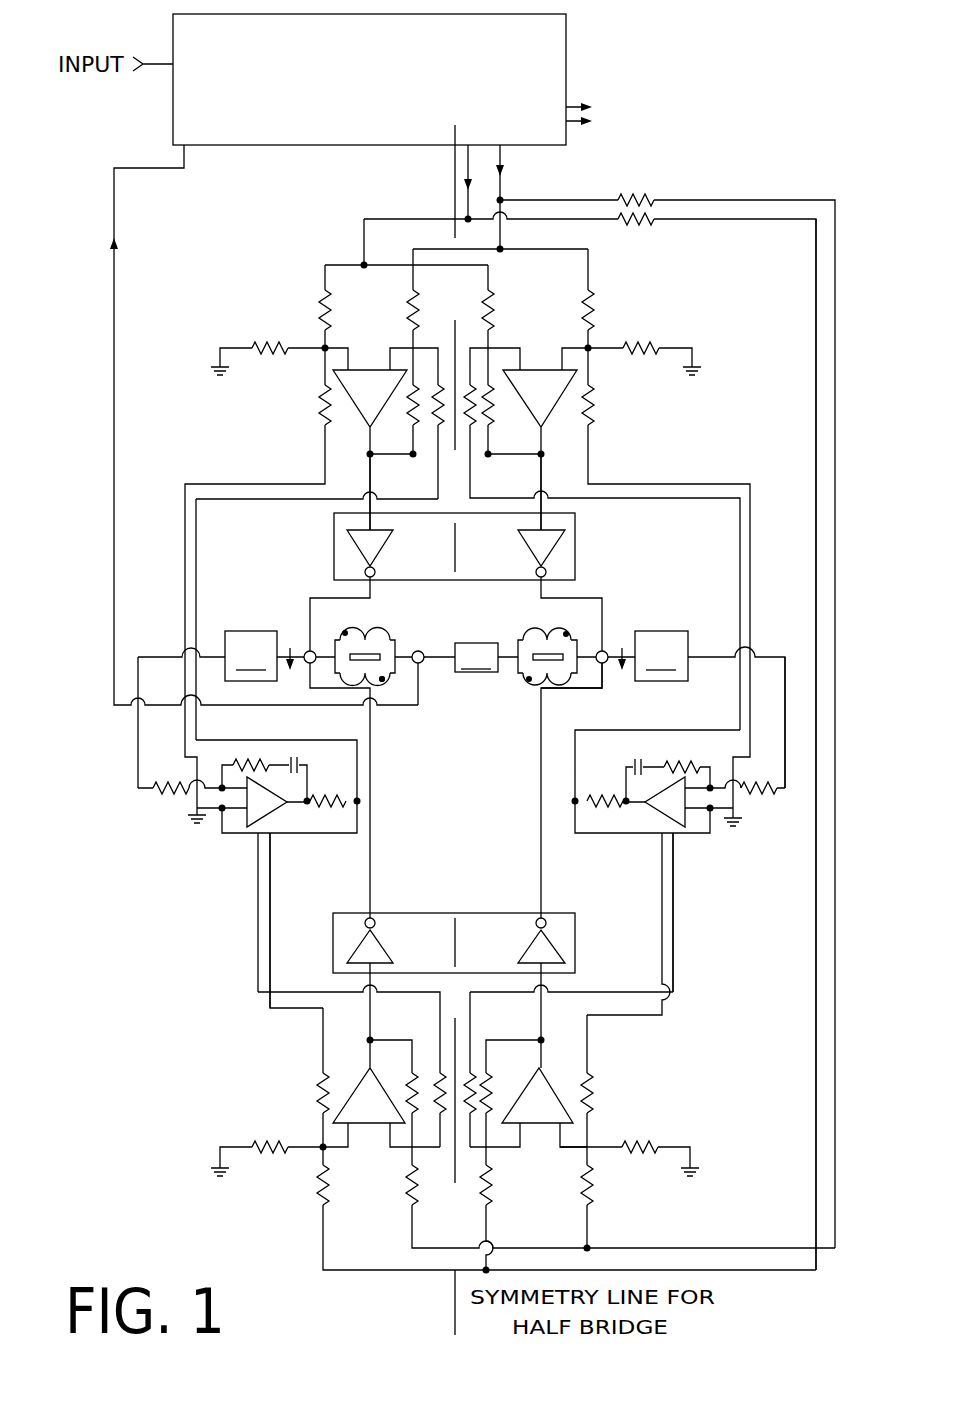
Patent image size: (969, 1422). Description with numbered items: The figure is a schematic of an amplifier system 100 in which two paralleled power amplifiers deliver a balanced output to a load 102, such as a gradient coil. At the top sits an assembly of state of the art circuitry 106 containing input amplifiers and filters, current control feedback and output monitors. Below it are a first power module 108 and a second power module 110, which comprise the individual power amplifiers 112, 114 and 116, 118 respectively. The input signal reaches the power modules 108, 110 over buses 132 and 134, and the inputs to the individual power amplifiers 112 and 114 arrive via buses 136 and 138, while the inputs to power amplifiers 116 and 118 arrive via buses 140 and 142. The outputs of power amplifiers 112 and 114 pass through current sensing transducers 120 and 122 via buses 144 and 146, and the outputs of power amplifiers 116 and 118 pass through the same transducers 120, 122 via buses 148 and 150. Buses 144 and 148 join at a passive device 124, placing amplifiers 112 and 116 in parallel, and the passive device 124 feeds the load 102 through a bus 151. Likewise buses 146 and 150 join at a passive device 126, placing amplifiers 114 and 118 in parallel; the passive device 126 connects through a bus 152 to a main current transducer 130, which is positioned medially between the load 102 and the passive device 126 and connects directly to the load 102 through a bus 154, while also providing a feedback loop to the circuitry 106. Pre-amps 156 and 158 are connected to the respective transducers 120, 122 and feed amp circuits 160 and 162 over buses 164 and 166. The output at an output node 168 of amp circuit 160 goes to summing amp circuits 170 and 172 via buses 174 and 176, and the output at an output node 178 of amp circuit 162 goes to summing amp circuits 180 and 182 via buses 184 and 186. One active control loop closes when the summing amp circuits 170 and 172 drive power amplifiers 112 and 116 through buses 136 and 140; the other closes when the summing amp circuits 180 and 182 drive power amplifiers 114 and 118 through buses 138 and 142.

The amplifier system 100 is at (716, 110).
The load 102 is at (476, 657).
The state of the art circuitry 106 is at (572, 58).
The first power module 108 is at (592, 529).
The second power module 110 is at (455, 900).
The power amplifier 112 is at (548, 553).
The power amplifier 114 is at (362, 553).
The power amplifier 116 is at (531, 932).
The power amplifier 118 is at (383, 932).
The current sensing transducer 120 is at (609, 651).
The current sensing transducer 122 is at (305, 650).
The passive device 124 is at (567, 689).
The passive device 126 is at (390, 678).
The main current transducer 130 is at (410, 678).
The bus 132 is at (466, 200).
The bus 134 is at (500, 158).
The bus 136 is at (543, 476).
The bus 138 is at (368, 476).
The bus 140 is at (543, 980).
The bus 142 is at (368, 980).
The bus 144 is at (536, 598).
The bus 146 is at (373, 597).
The bus 148 is at (540, 745).
The bus 150 is at (372, 800).
The bus 151 is at (512, 662).
The bus 152 is at (400, 640).
The bus 154 is at (440, 633).
The pre-amp 156 is at (661, 656).
The pre-amp 158 is at (251, 656).
The amp circuit 160 is at (742, 820).
The amp circuit 162 is at (179, 815).
The bus 164 is at (787, 722).
The bus 166 is at (138, 752).
The output node 168 is at (626, 806).
The summing amp circuit 170 is at (545, 358).
The summing amp circuit 172 is at (540, 1135).
The bus 174 is at (576, 760).
The bus 176 is at (570, 835).
The output node 178 is at (303, 804).
The summing amp circuit 180 is at (366, 358).
The summing amp circuit 182 is at (366, 1135).
The bus 184 is at (354, 740).
The bus 186 is at (271, 899).